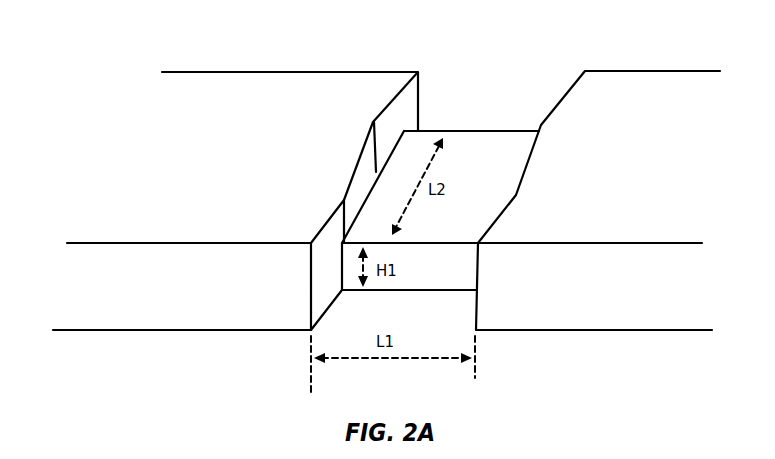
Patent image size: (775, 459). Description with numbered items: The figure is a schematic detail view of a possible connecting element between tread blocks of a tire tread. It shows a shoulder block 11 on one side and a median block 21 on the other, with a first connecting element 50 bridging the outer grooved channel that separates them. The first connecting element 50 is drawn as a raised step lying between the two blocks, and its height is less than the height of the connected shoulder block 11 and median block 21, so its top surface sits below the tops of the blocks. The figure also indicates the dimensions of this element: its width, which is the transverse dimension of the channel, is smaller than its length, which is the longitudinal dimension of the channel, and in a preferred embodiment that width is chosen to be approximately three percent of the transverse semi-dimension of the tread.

The shoulder block 11 is at (235, 201).
The median block 21 is at (598, 200).
The first connecting element 50 is at (463, 121).